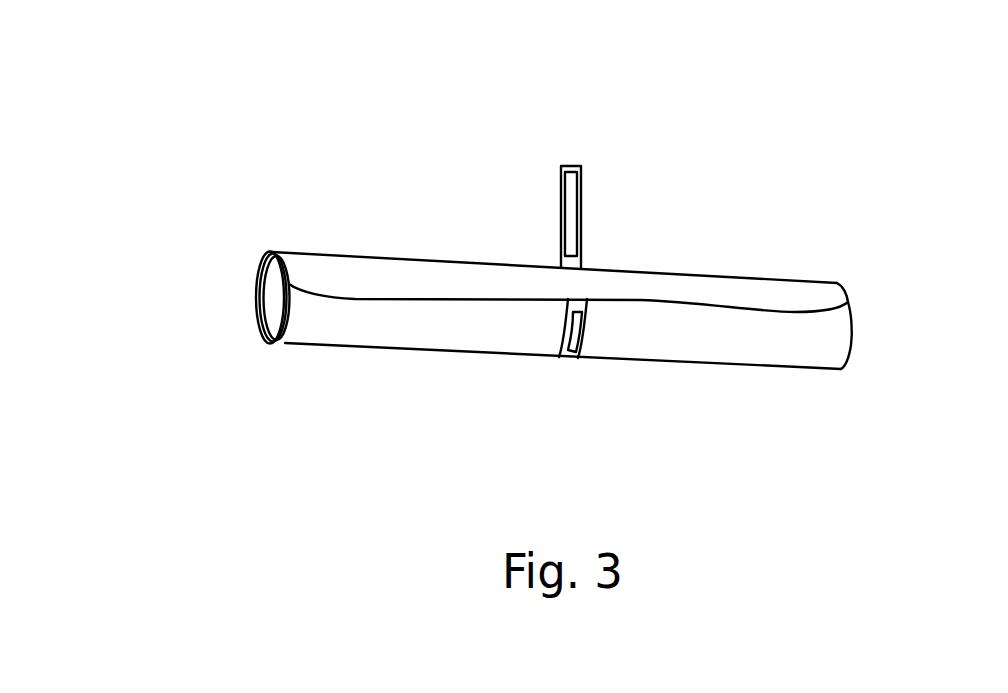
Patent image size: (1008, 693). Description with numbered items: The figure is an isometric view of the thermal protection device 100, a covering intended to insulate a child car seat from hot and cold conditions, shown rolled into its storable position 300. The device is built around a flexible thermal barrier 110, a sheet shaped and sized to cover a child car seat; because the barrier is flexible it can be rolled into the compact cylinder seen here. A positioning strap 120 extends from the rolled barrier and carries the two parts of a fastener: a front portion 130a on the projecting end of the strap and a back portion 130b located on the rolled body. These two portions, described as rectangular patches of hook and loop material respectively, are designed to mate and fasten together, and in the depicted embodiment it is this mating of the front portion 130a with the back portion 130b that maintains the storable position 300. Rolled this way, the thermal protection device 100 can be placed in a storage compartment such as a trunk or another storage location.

The thermal protection device 100 is at (136, 104).
The storable position 300 is at (554, 249).
The flexible thermal barrier 110 is at (351, 254).
The positioning strap 120 is at (560, 168).
The front portion 130a is at (581, 216).
The back portion 130b is at (578, 326).